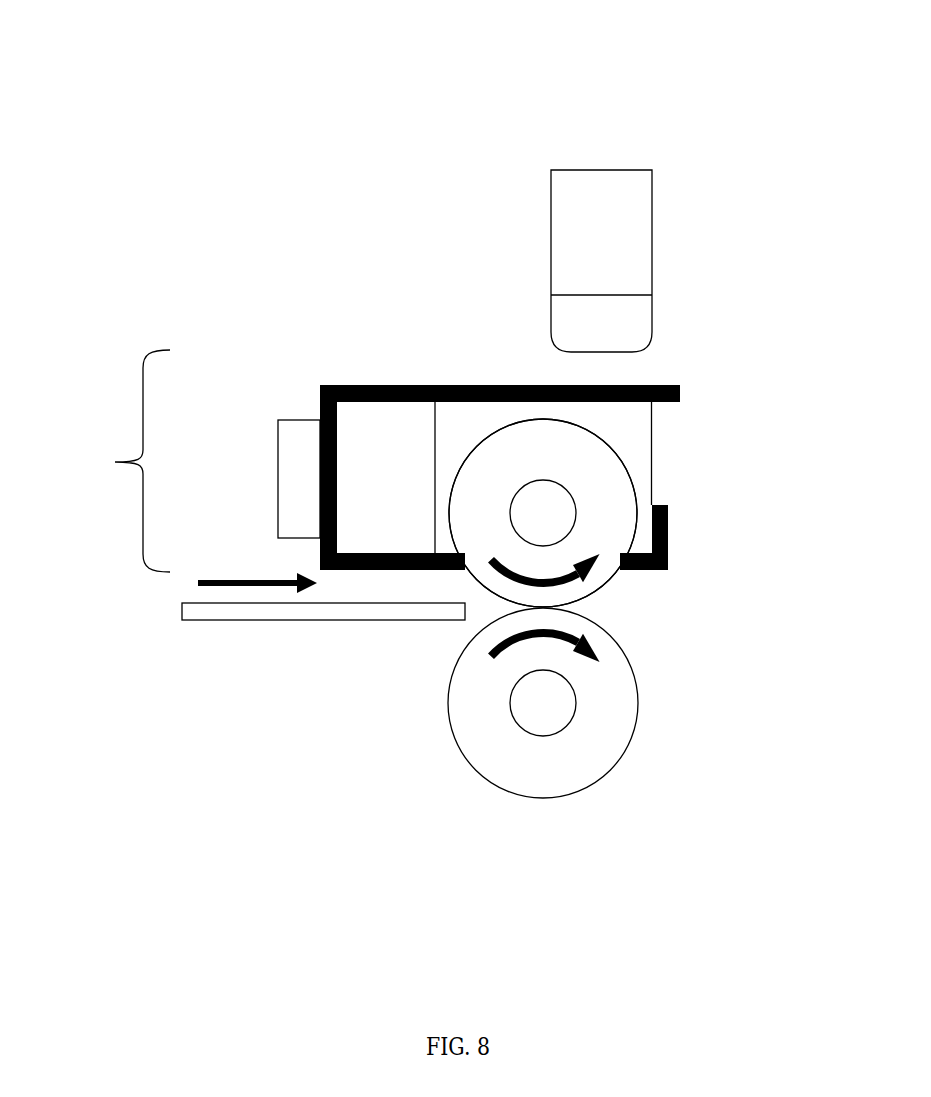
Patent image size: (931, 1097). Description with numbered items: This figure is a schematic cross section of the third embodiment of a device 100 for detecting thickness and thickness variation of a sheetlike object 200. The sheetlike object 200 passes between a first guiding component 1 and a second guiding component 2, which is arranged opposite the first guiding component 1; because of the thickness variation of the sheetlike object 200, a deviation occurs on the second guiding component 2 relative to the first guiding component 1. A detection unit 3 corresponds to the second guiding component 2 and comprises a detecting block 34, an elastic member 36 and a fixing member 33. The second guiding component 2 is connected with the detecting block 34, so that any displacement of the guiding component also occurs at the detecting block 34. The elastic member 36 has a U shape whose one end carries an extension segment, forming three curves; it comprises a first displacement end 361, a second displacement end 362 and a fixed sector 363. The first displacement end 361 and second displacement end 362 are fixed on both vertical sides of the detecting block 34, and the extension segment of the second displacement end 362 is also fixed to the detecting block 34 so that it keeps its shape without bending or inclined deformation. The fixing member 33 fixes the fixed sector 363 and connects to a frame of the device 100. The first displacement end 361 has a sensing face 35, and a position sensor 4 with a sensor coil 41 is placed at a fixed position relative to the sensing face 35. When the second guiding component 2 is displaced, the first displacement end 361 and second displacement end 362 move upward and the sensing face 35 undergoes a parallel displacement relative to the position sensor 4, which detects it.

The device 100 is at (271, 128).
The first guiding component 1 is at (607, 695).
The second guiding component 2 is at (612, 565).
The detection unit 3 is at (125, 461).
The fixing member 33 is at (288, 452).
The detecting block 34 is at (640, 478).
The sensing face 35 is at (600, 390).
The elastic member 36 is at (372, 388).
The first displacement end 361 is at (680, 392).
The second displacement end 362 is at (668, 570).
The fixed sector 363 is at (328, 506).
The position sensor 4 is at (631, 213).
The sensor coil 41 is at (630, 347).
The sheetlike object 200 is at (203, 613).